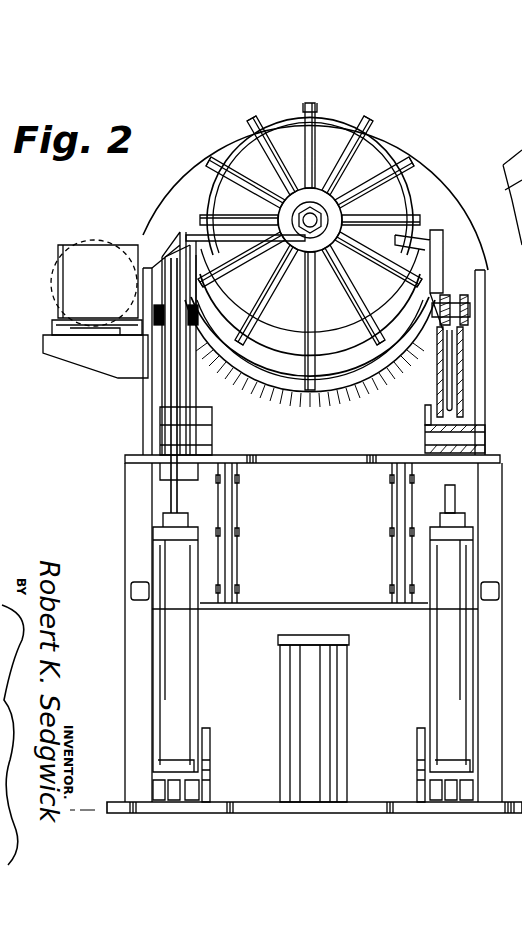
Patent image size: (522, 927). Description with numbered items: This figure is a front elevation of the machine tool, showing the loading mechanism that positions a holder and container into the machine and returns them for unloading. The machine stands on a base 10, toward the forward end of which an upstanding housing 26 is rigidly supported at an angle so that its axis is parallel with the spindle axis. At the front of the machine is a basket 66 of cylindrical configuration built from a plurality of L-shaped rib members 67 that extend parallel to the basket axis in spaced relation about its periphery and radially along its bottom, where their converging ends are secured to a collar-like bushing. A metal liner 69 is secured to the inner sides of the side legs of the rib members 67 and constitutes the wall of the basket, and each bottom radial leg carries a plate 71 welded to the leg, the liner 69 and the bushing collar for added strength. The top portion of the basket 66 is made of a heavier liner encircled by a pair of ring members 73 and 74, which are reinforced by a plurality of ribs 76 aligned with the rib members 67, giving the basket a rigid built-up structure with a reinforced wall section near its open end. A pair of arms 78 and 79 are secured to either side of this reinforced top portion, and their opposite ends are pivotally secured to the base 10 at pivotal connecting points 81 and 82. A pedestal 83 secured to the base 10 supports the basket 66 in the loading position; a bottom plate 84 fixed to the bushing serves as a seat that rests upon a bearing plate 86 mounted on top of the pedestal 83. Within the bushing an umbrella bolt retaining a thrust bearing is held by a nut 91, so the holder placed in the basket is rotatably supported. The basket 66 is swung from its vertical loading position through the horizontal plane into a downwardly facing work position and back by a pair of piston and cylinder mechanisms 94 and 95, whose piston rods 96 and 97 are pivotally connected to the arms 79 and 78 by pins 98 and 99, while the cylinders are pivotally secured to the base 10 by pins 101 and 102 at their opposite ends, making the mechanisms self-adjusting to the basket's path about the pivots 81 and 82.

The base 10 is at (138, 517).
The housing 26 is at (171, 190).
The basket 66 is at (352, 108).
The L-shaped rib members 67 is at (370, 122).
The metal liner 69 is at (240, 322).
The plate 71 is at (342, 300).
The ring member 73 is at (356, 380).
The ring member 74 is at (312, 449).
The ribs 76 is at (276, 392).
The arm 78 is at (450, 260).
The arm 79 is at (163, 243).
The pivotal connecting point 81 is at (212, 440).
The pivotal connecting point 82 is at (425, 438).
The pedestal 83 is at (323, 692).
The bottom plate 84 is at (316, 262).
The bearing plate 86 is at (316, 634).
The nut 91 is at (280, 218).
The piston and cylinder mechanism 94 is at (175, 628).
The piston and cylinder mechanism 95 is at (448, 640).
The piston rod 96 is at (170, 493).
The piston rod 97 is at (457, 498).
The pin 98 is at (157, 328).
The pin 99 is at (470, 310).
The pin 101 is at (212, 785).
The pin 102 is at (418, 786).